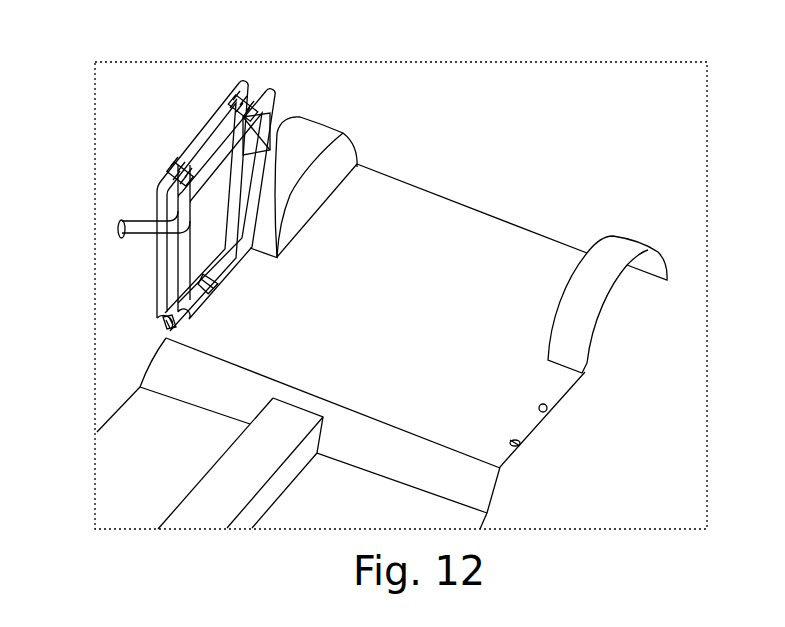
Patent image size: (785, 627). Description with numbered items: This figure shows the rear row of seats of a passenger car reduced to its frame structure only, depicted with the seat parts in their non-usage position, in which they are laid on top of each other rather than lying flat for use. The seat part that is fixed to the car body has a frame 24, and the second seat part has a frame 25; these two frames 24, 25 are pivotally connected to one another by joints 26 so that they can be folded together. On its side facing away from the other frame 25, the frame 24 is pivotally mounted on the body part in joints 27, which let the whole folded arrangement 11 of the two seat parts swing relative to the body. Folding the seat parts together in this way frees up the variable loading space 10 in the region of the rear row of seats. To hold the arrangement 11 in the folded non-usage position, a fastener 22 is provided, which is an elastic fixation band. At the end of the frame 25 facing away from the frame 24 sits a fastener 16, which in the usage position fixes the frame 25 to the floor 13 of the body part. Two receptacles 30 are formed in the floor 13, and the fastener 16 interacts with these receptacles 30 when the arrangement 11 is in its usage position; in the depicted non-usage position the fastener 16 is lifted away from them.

The loading space 10 is at (419, 297).
The arrangement of the two seat parts 11 is at (110, 241).
The floor 13 is at (353, 390).
The fastener 16 is at (193, 331).
The fastener 22 is at (270, 112).
The frame 24 is at (157, 259).
The frame 25 is at (187, 268).
The joints 26 is at (235, 100).
The joints 27 is at (164, 339).
The receptacles 30 is at (520, 443).